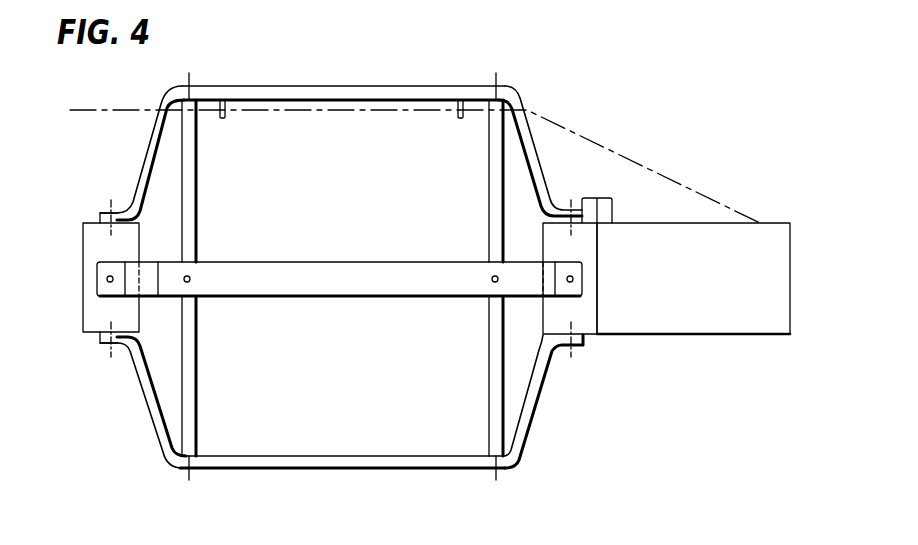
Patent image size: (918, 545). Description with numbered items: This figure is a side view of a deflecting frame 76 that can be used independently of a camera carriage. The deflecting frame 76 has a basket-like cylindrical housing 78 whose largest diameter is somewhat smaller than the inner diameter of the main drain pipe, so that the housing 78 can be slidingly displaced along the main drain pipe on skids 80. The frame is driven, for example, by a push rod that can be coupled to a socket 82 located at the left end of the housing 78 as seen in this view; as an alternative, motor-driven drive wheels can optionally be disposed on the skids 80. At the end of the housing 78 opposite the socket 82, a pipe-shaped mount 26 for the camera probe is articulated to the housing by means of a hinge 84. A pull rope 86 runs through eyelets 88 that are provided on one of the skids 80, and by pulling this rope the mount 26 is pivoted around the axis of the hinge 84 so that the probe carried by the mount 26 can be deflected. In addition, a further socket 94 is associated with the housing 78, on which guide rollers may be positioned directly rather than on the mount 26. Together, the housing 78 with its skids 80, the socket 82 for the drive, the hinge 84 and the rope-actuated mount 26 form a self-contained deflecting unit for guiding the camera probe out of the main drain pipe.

The mount 26 is at (676, 320).
The deflecting frame 76 is at (321, 276).
The housing 78 is at (143, 167).
The skids 80 is at (353, 298).
The socket 82 is at (83, 321).
The hinge 84 is at (598, 197).
The pull rope 86 is at (642, 161).
The eyelets 88 is at (222, 120).
The socket 94 is at (590, 341).